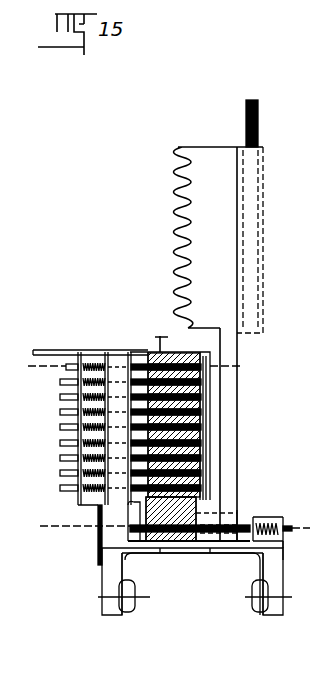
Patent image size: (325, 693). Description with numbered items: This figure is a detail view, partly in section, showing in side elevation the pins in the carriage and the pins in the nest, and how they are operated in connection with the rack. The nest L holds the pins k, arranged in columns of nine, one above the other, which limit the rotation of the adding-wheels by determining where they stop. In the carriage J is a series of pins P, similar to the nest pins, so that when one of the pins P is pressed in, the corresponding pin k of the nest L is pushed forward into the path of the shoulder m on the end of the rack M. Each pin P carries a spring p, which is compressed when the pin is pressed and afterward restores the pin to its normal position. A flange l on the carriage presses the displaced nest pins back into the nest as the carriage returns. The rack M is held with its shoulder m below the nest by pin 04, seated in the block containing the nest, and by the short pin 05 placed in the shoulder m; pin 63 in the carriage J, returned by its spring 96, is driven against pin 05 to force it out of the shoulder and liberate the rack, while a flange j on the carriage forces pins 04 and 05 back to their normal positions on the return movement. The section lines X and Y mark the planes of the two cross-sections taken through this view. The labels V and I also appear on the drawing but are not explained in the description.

The pins P is at (60, 412).
The spring p is at (95, 366).
The flange j is at (126, 362).
The pins k is at (147, 356).
The carriage J is at (283, 580).
The nest L is at (161, 337).
The flange l is at (212, 366).
The rack M is at (228, 400).
The adjusting screw V is at (246, 132).
The section line X X is at (133, 367).
The section line Y Y is at (172, 528).
The shoulder m is at (220, 541).
The spring 96 is at (266, 524).
The bracket I is at (254, 515).
The pin 63 is at (285, 532).
The pin 04 is at (168, 548).
The short pin 05 is at (215, 544).